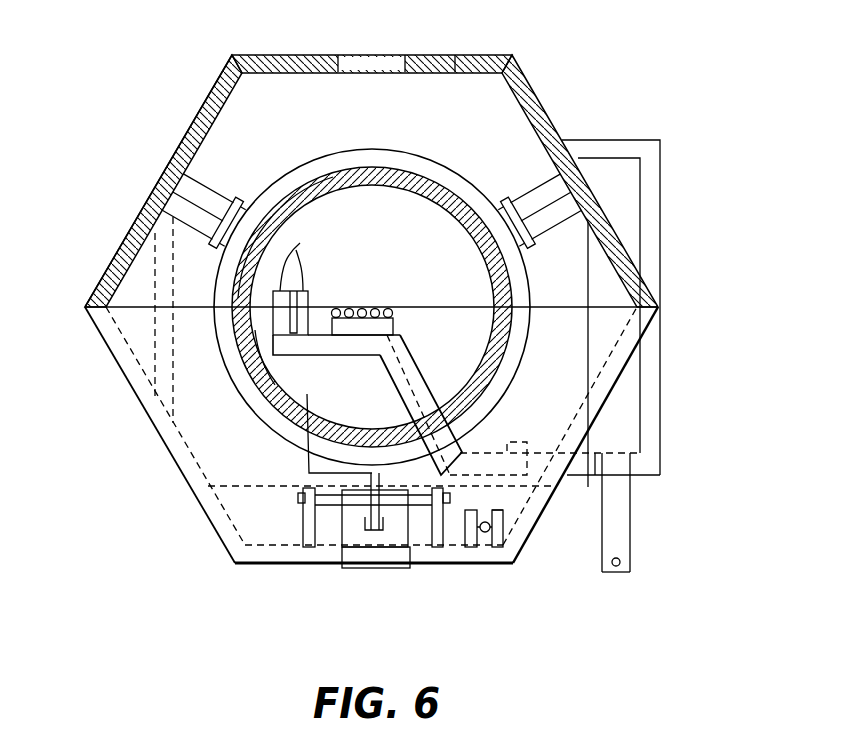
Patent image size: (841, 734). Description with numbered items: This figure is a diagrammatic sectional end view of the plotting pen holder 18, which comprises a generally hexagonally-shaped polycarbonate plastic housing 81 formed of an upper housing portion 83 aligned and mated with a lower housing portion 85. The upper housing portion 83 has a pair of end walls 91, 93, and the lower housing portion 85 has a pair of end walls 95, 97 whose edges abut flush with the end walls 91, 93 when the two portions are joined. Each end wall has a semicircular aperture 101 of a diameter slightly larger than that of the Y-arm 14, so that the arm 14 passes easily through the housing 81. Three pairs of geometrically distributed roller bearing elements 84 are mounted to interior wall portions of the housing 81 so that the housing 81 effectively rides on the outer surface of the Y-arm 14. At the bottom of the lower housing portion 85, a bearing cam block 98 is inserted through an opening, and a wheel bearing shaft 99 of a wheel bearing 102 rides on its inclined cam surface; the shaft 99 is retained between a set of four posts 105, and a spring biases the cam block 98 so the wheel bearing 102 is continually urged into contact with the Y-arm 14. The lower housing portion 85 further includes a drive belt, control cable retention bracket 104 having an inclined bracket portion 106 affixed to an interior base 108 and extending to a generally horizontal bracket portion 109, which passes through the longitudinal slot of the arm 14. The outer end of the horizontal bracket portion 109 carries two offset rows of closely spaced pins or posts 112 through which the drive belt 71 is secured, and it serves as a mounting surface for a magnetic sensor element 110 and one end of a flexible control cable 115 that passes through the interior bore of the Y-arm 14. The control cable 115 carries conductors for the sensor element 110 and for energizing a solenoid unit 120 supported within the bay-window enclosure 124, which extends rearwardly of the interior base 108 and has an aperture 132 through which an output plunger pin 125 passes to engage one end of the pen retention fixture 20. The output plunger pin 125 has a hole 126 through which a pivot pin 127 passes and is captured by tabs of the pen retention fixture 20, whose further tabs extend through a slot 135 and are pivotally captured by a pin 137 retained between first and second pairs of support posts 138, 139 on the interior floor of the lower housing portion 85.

The plotting pen holder 18 is at (356, 303).
The housing 81 is at (203, 105).
The upper housing portion 83 is at (131, 229).
The lower housing portion 85 is at (123, 372).
The end wall 91 is at (372, 41).
The end wall 93 is at (456, 82).
The end wall 95 is at (341, 569).
The end wall 97 is at (260, 532).
The semicircular aperture 101 is at (287, 173).
The Y-arm 14 is at (406, 170).
The roller bearing elements 84 is at (240, 203).
The pins or posts 112 is at (300, 243).
The drive belt 71 is at (290, 318).
The magnetic sensor element 110 is at (333, 327).
The flexible control cable 115 is at (378, 309).
The drive belt, control cable retention bracket 104 is at (394, 383).
The inclined bracket portion 106 is at (420, 372).
The pen retention fixture 20 is at (420, 428).
The horizontal bracket portion 109 is at (263, 367).
The wheel bearing 102 is at (307, 394).
The wheel bearing shaft 99 is at (298, 496).
The posts 105 is at (312, 538).
The slot 135 is at (427, 556).
The bearing cam block 98 is at (373, 557).
The pin 137 is at (491, 526).
The support posts 138 is at (505, 588).
The support posts 139 is at (500, 548).
The interior base 108 is at (505, 512).
The solenoid unit 120 is at (641, 201).
The enclosure 124 is at (661, 412).
The aperture 132 is at (641, 464).
The output plunger pin 125 is at (632, 523).
The pivot pin 127 is at (600, 562).
The hole 126 is at (620, 567).